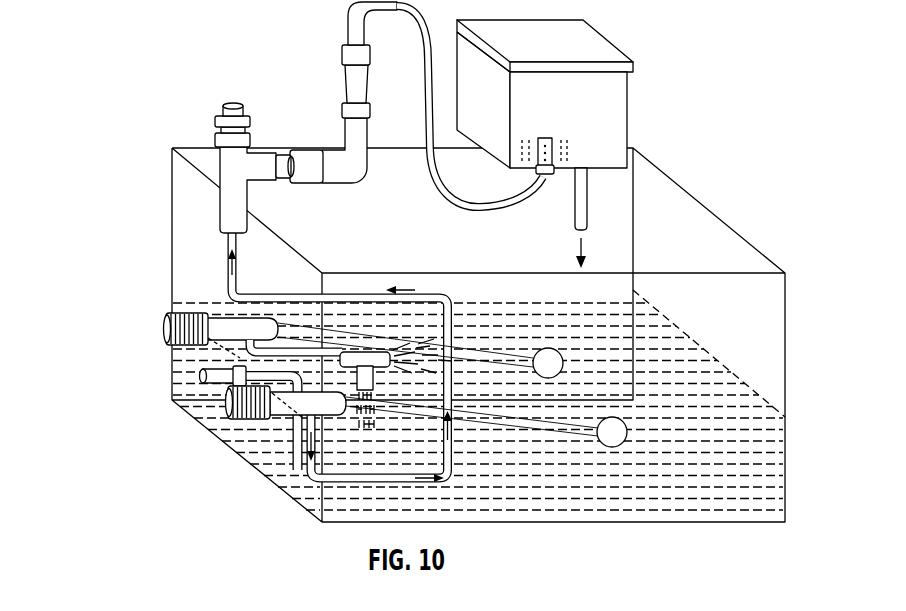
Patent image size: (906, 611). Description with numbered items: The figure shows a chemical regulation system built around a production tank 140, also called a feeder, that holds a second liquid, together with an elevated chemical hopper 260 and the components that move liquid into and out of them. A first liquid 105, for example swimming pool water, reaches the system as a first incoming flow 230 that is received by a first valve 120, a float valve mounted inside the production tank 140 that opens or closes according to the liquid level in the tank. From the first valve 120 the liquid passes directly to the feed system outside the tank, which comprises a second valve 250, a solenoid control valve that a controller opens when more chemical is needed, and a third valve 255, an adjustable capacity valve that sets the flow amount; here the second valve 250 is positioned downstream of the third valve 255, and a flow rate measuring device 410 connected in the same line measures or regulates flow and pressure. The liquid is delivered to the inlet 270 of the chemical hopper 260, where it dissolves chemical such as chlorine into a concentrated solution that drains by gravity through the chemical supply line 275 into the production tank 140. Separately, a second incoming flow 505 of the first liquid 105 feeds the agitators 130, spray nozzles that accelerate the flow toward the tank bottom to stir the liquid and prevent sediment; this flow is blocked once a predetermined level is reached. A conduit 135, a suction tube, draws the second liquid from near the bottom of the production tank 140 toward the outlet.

The first liquid 105 is at (301, 384).
The second incoming flow 505 is at (162, 329).
The first incoming flow 230 is at (222, 402).
The first valve 120 is at (336, 413).
The agitators 130 is at (226, 330).
The conduit 135 is at (285, 352).
The production tank 140 is at (680, 186).
The second valve 250 is at (302, 158).
The third valve 255 is at (228, 104).
The chemical hopper 260 is at (628, 106).
The inlet 270 is at (549, 139).
The chemical supply line 275 is at (575, 218).
The flow rate measuring device 410 is at (352, 80).